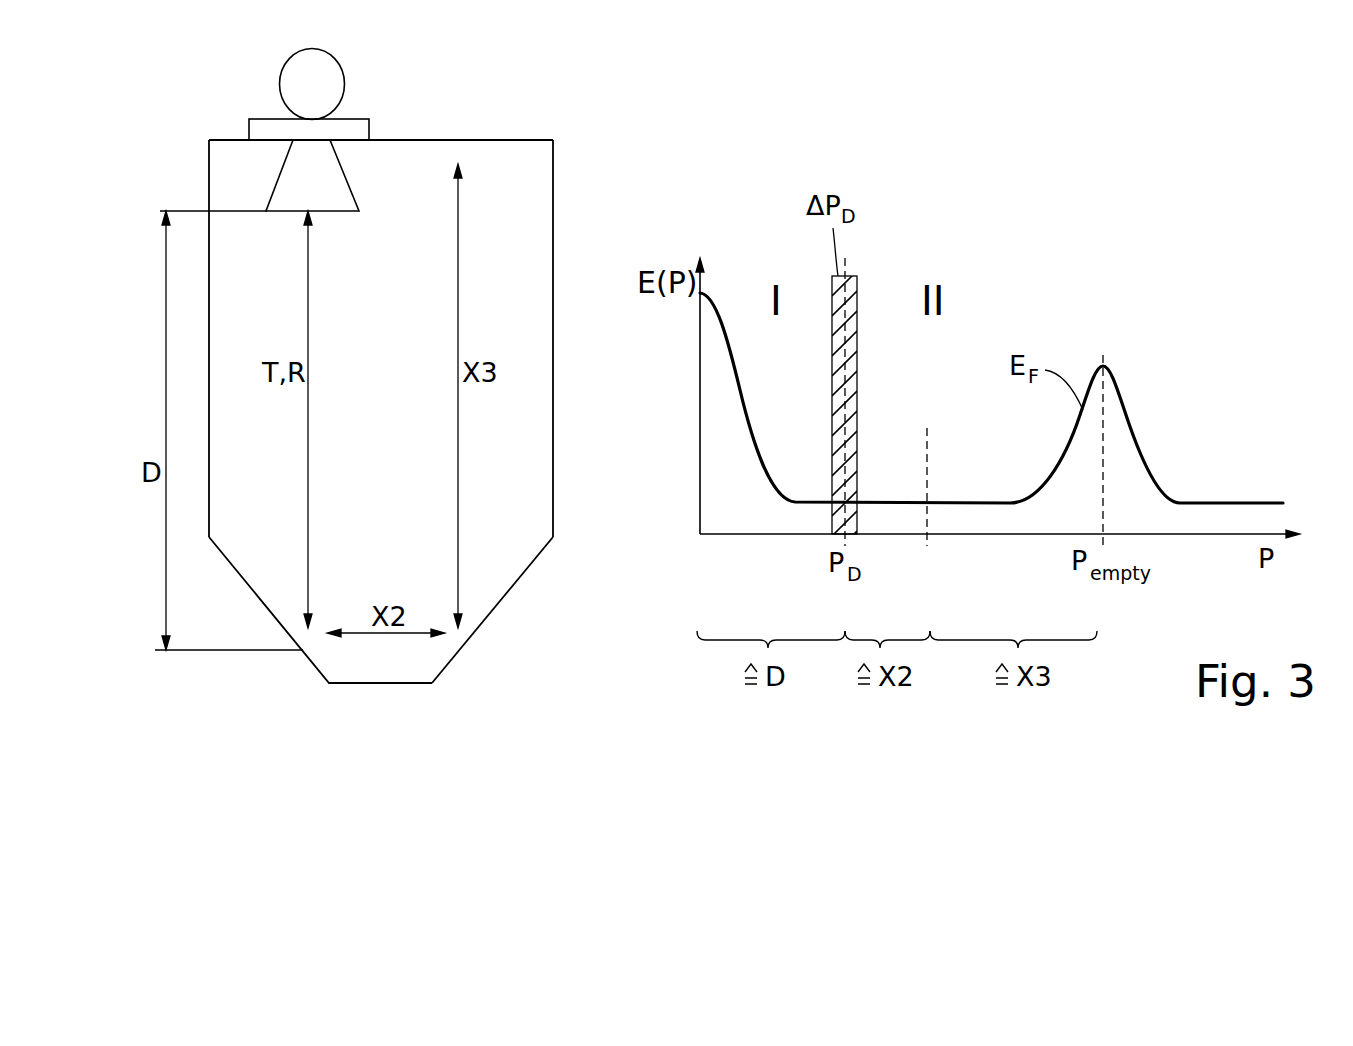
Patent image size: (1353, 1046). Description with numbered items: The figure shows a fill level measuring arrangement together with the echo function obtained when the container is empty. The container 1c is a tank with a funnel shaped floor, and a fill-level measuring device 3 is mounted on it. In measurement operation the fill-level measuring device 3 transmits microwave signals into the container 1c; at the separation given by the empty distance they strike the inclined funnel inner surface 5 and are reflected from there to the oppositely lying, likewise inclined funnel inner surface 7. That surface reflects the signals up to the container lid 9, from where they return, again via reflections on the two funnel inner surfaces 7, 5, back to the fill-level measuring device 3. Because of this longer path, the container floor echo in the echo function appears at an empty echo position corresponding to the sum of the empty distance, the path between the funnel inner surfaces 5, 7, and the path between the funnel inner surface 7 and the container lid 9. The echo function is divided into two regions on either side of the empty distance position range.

The fill-level measuring device 3 is at (290, 82).
The container lid 9 is at (445, 140).
The container 1c is at (209, 173).
The funnel inner surface 5 is at (309, 660).
The funnel inner surface 7 is at (481, 624).